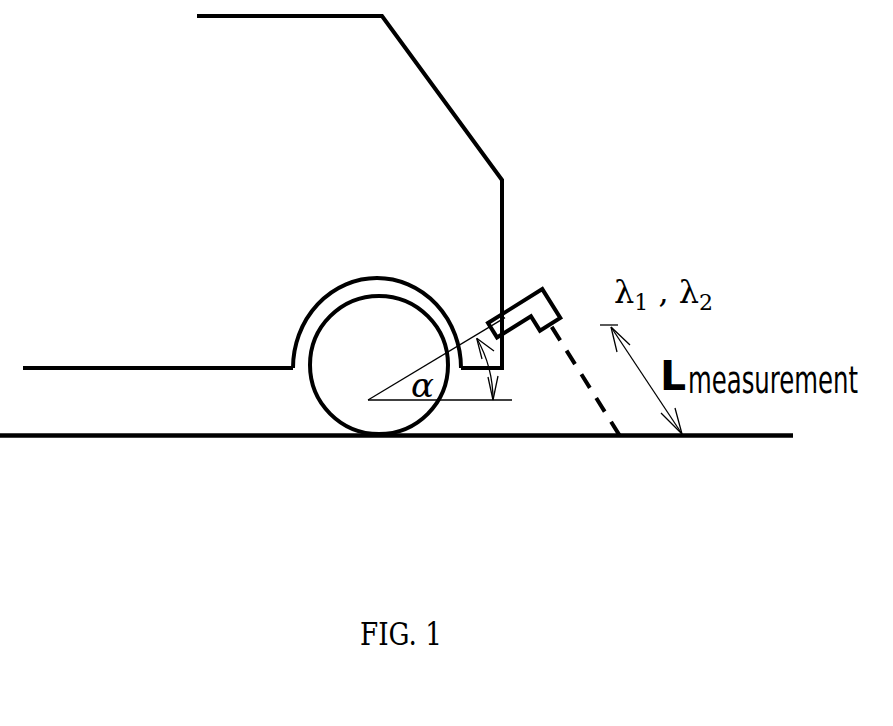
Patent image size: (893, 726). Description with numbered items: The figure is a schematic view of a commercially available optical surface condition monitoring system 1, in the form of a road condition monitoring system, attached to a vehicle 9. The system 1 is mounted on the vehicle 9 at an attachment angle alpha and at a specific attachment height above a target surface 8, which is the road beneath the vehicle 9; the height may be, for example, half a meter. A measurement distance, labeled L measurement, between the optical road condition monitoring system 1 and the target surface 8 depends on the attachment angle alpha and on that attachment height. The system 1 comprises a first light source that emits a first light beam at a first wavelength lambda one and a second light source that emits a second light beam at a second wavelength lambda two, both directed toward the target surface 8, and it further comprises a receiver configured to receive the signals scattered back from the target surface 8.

The vehicle 9 is at (490, 157).
The optical surface condition monitoring system 1 is at (548, 298).
The target surface 8 is at (625, 437).